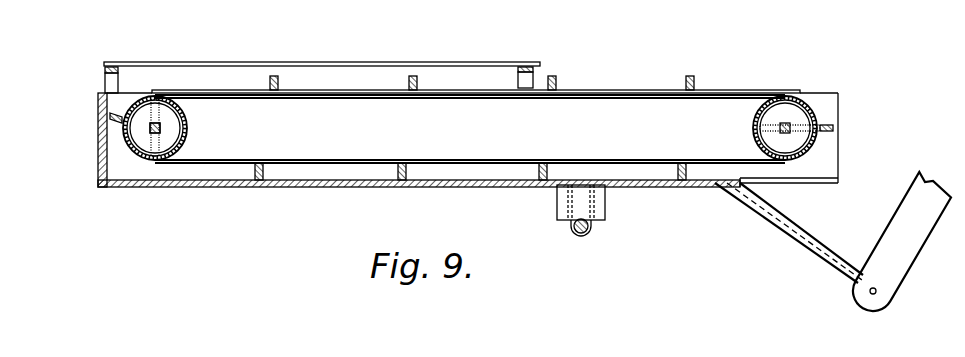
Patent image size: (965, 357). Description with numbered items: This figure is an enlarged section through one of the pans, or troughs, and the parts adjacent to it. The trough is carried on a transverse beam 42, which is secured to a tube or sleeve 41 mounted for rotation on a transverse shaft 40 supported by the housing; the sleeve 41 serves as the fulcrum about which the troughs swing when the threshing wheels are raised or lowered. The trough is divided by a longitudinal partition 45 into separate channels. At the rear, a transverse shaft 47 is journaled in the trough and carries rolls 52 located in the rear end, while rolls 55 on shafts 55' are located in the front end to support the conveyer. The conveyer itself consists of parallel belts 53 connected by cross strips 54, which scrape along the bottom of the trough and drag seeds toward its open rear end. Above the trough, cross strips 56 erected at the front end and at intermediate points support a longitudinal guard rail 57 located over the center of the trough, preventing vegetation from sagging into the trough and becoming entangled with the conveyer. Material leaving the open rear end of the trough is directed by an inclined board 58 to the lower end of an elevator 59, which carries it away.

The transverse shaft 40 is at (592, 232).
The tube or sleeve 41 is at (578, 241).
The transverse beam 42 is at (606, 203).
The longitudinal partition 45 is at (362, 187).
The transverse shaft 47 is at (764, 124).
The rolls 52 is at (758, 107).
The parallel belts 53 is at (326, 99).
The cross strips 54 is at (277, 79).
The rolls 55 is at (168, 128).
The shafts 55' is at (108, 146).
The cross strips 56 is at (104, 75).
The longitudinal guard rails 57 is at (228, 62).
The inclined board 58 is at (818, 258).
The elevator 59 is at (928, 237).